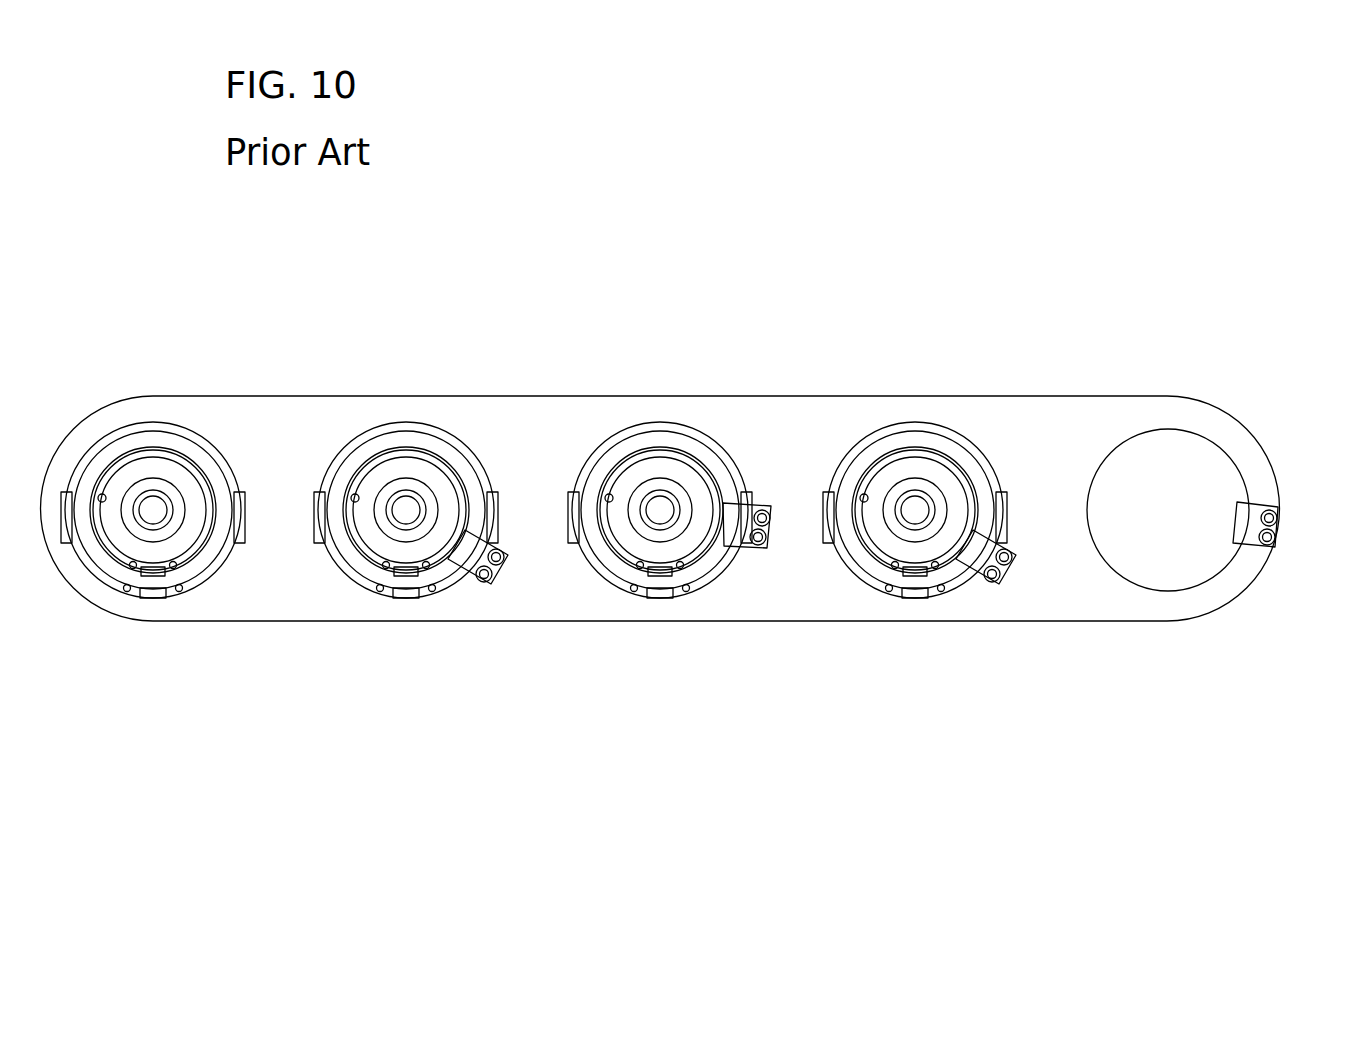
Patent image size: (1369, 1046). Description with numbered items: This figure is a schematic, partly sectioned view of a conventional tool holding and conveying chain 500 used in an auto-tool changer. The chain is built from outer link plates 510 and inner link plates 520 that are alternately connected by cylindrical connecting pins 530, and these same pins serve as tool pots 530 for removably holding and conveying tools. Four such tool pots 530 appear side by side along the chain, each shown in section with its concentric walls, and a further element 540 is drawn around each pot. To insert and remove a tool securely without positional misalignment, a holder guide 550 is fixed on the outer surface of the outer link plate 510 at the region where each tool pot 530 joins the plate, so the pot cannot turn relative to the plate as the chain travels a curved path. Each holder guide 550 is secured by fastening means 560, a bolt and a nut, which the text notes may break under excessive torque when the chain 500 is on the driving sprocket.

The tool holding and conveying chain 500 is at (1010, 214).
The outer link plate 510 is at (573, 588).
The inner link plate 520 is at (248, 603).
The cylindrical connecting pin (tool pot) 530 is at (172, 443).
The cylinder housing ring 540 is at (130, 427).
The holder guide 550 is at (448, 583).
The fastening means 560 is at (487, 587).